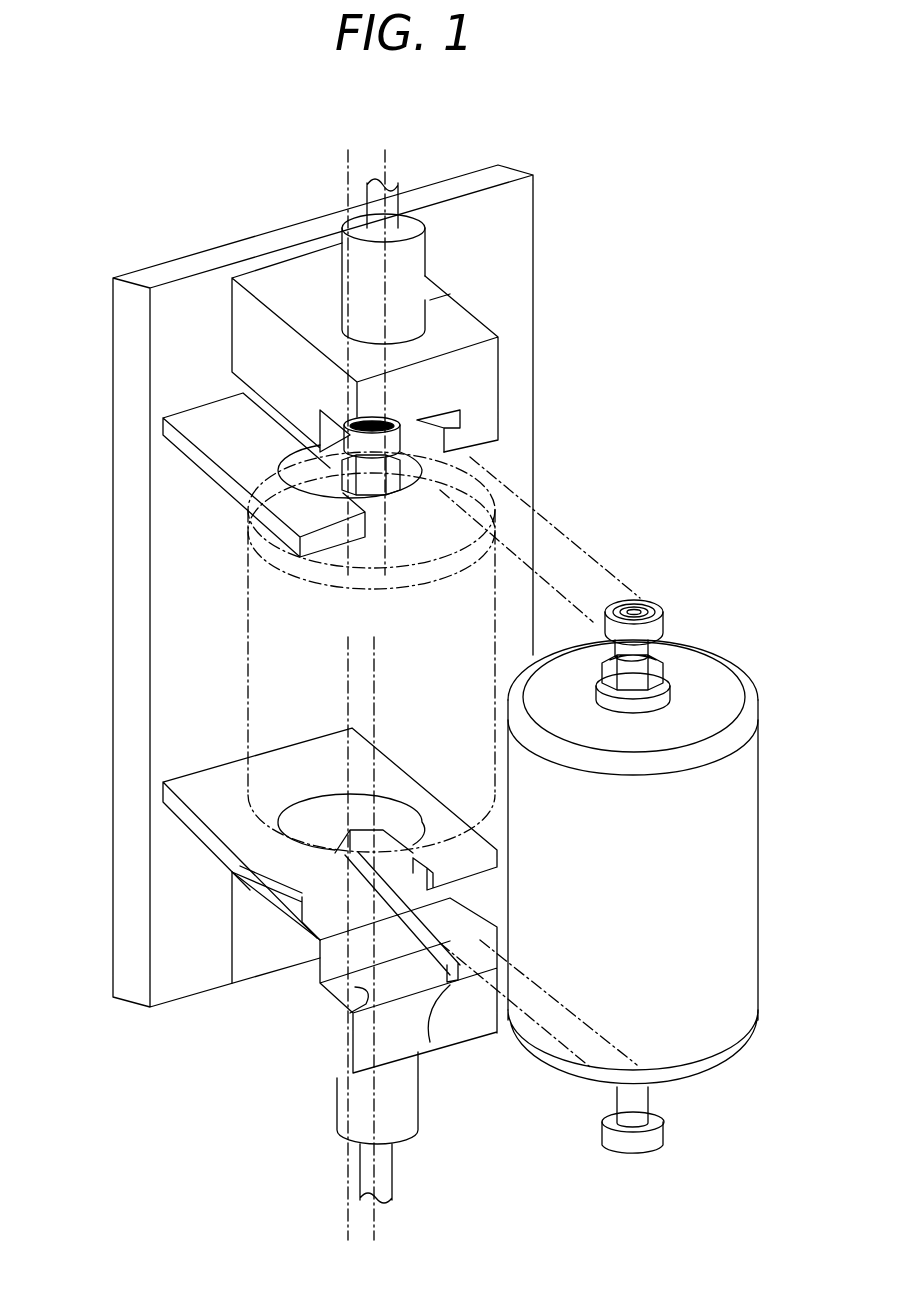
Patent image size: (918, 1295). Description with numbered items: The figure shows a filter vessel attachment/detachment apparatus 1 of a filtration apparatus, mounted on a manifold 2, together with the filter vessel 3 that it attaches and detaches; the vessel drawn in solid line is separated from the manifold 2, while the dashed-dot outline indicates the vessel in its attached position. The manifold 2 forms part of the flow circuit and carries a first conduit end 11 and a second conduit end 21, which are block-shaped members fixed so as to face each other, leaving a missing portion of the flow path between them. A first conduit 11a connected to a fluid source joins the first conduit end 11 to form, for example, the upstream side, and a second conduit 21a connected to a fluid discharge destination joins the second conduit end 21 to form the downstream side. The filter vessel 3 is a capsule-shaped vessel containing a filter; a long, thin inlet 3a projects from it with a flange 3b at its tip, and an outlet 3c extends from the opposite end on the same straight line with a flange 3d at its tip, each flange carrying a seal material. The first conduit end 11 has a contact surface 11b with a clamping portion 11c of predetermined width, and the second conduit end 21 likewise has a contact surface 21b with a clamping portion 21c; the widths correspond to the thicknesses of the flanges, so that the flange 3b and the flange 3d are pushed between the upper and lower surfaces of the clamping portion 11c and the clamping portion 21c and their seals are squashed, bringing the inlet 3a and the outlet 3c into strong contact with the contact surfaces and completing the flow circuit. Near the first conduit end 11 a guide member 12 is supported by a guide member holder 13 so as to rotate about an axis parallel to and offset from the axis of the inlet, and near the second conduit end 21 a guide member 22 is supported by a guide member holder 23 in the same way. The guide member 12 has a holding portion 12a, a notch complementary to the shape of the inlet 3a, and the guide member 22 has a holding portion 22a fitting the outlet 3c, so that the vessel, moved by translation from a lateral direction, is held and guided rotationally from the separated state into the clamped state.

The filter vessel attachment/detachment apparatus 1 is at (642, 332).
The manifold 2 is at (505, 287).
The filter vessel 3 is at (485, 548).
The inlet 3a is at (663, 655).
The flange 3b is at (650, 600).
The outlet 3c is at (627, 1098).
The flange 3d is at (603, 1133).
The first conduit end 11 is at (472, 382).
The first conduit 11a is at (438, 300).
The contact surface 11b is at (403, 493).
The clamping portion 11c is at (477, 430).
The guide member 12 is at (340, 487).
The holding portion 12a is at (347, 473).
The guide member holder 13 is at (420, 420).
The second conduit end 21 is at (353, 1013).
The second conduit 21a is at (368, 1100).
The contact surface 21b is at (360, 1000).
The clamping portion 21c is at (430, 1042).
The guide member 22 is at (313, 850).
The holding portion 22a is at (337, 848).
The guide member holder 23 is at (227, 795).